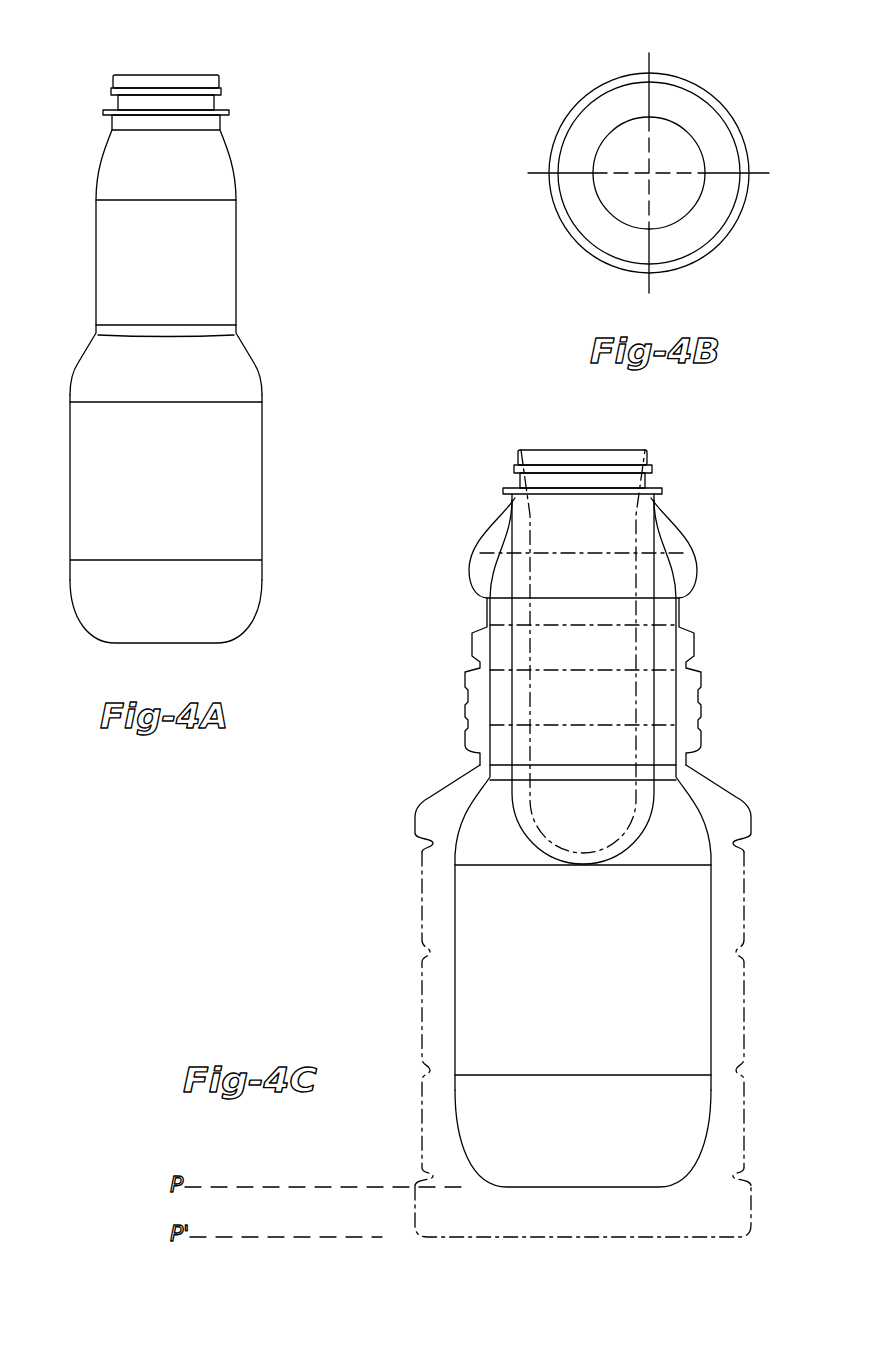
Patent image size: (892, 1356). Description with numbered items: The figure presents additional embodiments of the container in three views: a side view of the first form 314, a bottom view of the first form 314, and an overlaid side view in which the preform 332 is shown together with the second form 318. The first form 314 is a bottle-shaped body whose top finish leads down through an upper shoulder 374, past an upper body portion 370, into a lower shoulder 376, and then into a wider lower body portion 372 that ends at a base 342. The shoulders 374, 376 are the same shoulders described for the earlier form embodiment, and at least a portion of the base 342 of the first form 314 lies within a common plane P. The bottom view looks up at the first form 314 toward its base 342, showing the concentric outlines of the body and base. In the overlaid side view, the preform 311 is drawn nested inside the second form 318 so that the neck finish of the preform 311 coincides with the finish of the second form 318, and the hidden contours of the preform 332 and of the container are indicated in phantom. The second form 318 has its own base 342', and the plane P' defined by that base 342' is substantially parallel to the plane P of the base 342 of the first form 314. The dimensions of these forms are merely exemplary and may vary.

In FIG. 4A, the first form 314 is at (214, 68).
In FIG. 4B, the first form 314 is at (580, 77).
In FIG. 4A, the shoulder 374 is at (238, 156).
In FIG. 4A, the upper body portion 370 is at (240, 242).
In FIG. 4A, the shoulder 376 is at (260, 364).
In FIG. 4A, the lower body portion 372 is at (263, 510).
In FIG. 4A, the base 342 is at (187, 626).
In FIG. 4B, the base 342 is at (687, 154).
In FIG. 4C, the base 342 is at (579, 1180).
In FIG. 4C, the preform 311 is at (641, 442).
In FIG. 4C, the second form 318 is at (421, 796).
In FIG. 4C, the preform 332 is at (658, 645).
In FIG. 4C, the base 342' is at (583, 1236).